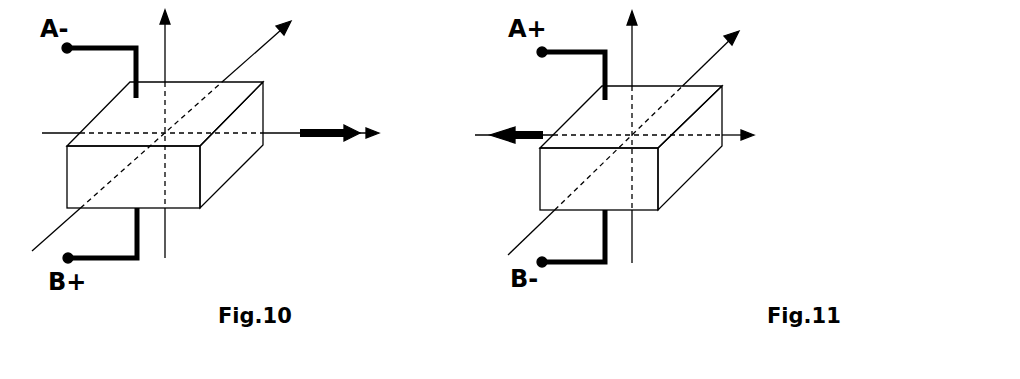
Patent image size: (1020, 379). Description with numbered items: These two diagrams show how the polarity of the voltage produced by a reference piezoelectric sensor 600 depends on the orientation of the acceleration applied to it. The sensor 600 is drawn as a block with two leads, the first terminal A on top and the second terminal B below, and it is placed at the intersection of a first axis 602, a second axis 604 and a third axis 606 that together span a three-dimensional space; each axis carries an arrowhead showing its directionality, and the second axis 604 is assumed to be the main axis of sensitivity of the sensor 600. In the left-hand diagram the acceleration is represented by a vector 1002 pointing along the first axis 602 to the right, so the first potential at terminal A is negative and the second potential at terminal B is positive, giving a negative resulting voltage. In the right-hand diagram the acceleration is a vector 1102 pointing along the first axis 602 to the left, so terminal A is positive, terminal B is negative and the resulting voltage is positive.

In FIG. 10, the reference piezoelectric sensor 600 is at (222, 170).
In FIG. 11, the reference piezoelectric sensor 600 is at (682, 172).
In FIG. 10, the first axis 602 is at (267, 133).
In FIG. 11, the first axis 602 is at (738, 138).
In FIG. 10, the second axis 604 is at (250, 58).
In FIG. 11, the second axis 604 is at (733, 35).
In FIG. 10, the third axis 606 is at (167, 216).
In FIG. 11, the third axis 606 is at (633, 225).
In FIG. 10, the vector 1002 is at (335, 114).
In FIG. 11, the vector 1102 is at (527, 142).